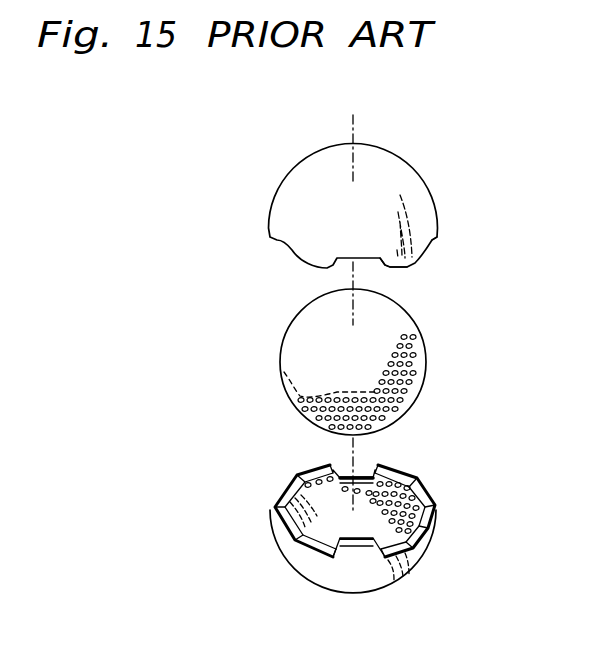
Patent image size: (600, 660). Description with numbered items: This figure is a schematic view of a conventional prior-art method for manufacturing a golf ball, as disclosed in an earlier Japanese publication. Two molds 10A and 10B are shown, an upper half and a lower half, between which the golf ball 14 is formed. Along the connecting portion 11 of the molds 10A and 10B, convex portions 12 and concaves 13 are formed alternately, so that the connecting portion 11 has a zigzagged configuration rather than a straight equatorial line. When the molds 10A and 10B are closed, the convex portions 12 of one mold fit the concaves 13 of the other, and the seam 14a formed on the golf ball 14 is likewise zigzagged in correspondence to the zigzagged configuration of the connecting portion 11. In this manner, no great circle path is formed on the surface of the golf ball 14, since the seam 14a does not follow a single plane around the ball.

The mold 10A is at (292, 178).
The mold 10B is at (278, 544).
The connecting portion 11 is at (297, 492).
The convex portion 12 is at (406, 262).
The concave 13 is at (432, 236).
The golf ball 14 is at (287, 342).
The seam 14a is at (283, 386).